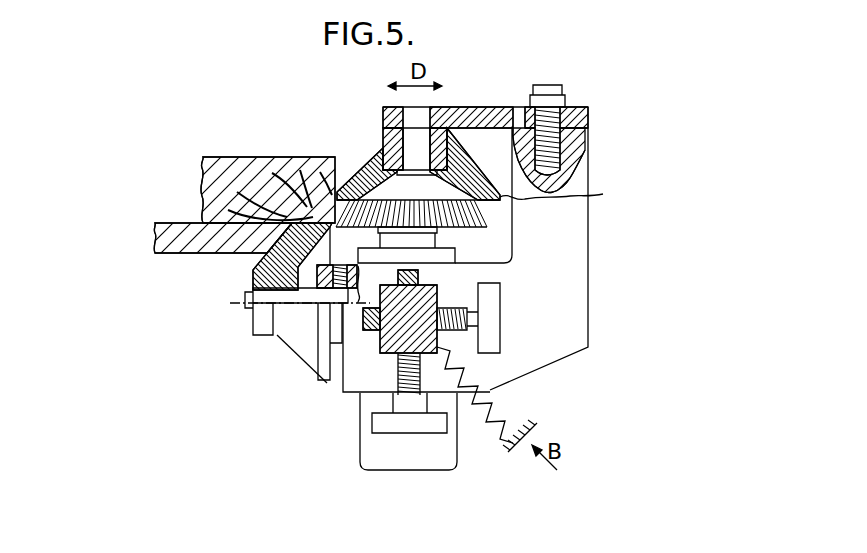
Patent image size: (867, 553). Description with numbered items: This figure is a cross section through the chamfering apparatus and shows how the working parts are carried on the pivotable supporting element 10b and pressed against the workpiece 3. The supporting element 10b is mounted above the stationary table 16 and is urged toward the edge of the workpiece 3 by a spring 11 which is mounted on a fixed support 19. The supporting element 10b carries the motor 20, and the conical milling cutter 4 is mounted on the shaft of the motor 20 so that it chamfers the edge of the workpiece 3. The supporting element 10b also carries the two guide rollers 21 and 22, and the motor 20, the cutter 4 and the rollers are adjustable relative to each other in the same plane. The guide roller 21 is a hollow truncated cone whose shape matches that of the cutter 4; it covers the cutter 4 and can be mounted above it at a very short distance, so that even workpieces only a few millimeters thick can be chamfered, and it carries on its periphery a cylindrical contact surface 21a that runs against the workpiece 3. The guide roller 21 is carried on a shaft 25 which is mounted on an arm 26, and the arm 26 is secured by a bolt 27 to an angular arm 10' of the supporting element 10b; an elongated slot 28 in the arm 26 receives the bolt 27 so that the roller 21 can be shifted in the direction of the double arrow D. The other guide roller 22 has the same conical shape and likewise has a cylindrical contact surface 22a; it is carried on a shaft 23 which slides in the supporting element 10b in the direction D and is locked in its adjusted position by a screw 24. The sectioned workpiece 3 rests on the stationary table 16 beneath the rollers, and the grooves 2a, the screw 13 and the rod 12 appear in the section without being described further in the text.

The workpiece 3 is at (228, 170).
The burrs / grooves on workpiece 2a is at (332, 220).
The stationary table 16 is at (181, 242).
The guide roller 21 is at (368, 172).
The cylindrical contact surface 21a is at (577, 196).
The shaft 25 is at (410, 118).
The arm 26 is at (478, 112).
The elongated slot 28 is at (527, 112).
The bolt 27 is at (567, 108).
The angular arm 10' is at (490, 248).
The milling cutter 4 is at (470, 220).
The screw 24 is at (345, 266).
The shaft 23 is at (310, 293).
The guide roller 22 is at (302, 348).
The cylindrical contact surface 22a is at (325, 387).
The adjusting screw 13 is at (457, 308).
The threaded rod 12 is at (398, 378).
The supporting element 10b is at (378, 352).
The motor 20 is at (377, 458).
The spring 11 is at (492, 430).
The fixed support 19 is at (525, 453).